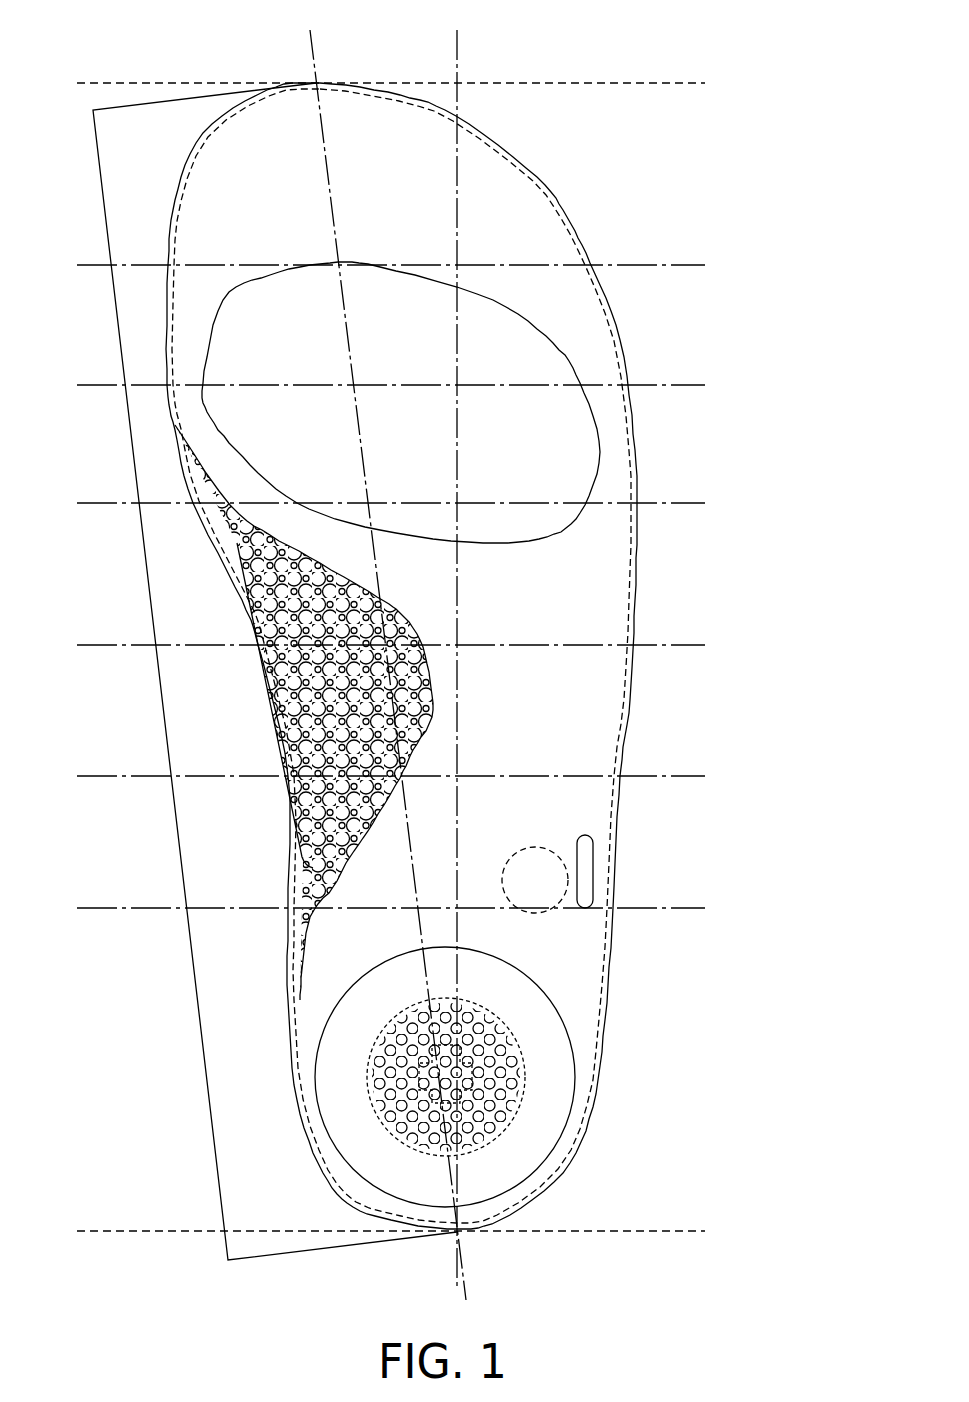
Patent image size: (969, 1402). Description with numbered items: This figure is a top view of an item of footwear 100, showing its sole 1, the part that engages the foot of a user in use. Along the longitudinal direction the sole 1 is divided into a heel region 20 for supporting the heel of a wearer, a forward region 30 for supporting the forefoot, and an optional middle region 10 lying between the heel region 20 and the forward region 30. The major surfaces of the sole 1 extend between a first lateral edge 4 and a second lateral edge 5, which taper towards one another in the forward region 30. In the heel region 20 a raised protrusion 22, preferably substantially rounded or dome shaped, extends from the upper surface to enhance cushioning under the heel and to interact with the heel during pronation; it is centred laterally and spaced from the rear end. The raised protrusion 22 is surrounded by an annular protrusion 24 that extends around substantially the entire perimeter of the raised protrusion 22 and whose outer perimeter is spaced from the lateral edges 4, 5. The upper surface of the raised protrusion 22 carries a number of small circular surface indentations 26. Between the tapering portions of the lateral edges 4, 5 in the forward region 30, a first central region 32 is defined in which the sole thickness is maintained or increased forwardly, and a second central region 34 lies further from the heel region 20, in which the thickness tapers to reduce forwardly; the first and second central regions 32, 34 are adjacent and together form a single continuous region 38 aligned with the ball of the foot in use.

The item of footwear 100 is at (748, 138).
The sole 1 is at (610, 575).
The middle region 10 is at (648, 713).
The forward region 30 is at (597, 258).
The second central region 34 is at (495, 348).
The single continuous region 38 is at (600, 452).
The first central region 32 is at (560, 515).
The first lateral edge 4 is at (288, 1000).
The second lateral edge 5 is at (613, 932).
The heel region 20 is at (655, 1043).
The raised protrusion 22 is at (523, 1125).
The annular protrusion 24 is at (545, 1178).
The surface indentations 26 is at (490, 1083).